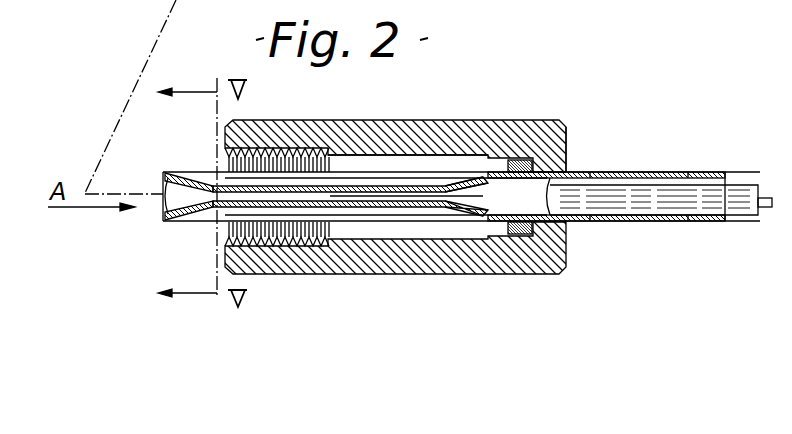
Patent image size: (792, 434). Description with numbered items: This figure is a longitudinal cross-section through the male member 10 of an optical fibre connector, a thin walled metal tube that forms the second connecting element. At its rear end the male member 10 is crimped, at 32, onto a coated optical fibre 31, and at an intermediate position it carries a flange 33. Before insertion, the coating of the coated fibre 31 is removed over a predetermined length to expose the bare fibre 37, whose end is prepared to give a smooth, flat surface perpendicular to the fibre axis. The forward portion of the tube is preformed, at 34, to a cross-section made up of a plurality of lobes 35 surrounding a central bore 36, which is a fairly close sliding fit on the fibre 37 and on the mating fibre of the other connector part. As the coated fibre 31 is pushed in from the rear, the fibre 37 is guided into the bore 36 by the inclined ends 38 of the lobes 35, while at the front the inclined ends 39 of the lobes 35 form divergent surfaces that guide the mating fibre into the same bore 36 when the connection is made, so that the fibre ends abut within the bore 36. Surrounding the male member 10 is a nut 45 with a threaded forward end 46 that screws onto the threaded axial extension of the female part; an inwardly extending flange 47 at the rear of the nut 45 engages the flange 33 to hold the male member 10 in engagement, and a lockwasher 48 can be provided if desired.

The male member 10 is at (500, 245).
The coated optical fibre 31 is at (740, 186).
The crimp 32 is at (688, 173).
The flange 33 is at (515, 188).
The preformed forward portion 34 is at (362, 186).
The lobes 35 is at (225, 212).
The central bore 36 is at (296, 200).
The fibre 37 is at (478, 205).
The inclined ends of lobes 38 is at (492, 165).
The inclined ends of lobes 39 is at (165, 195).
The nut 45 is at (365, 150).
The threaded forward end 46 is at (288, 147).
The inwardly extending flange 47 is at (568, 158).
The lockwasher 48 is at (533, 228).